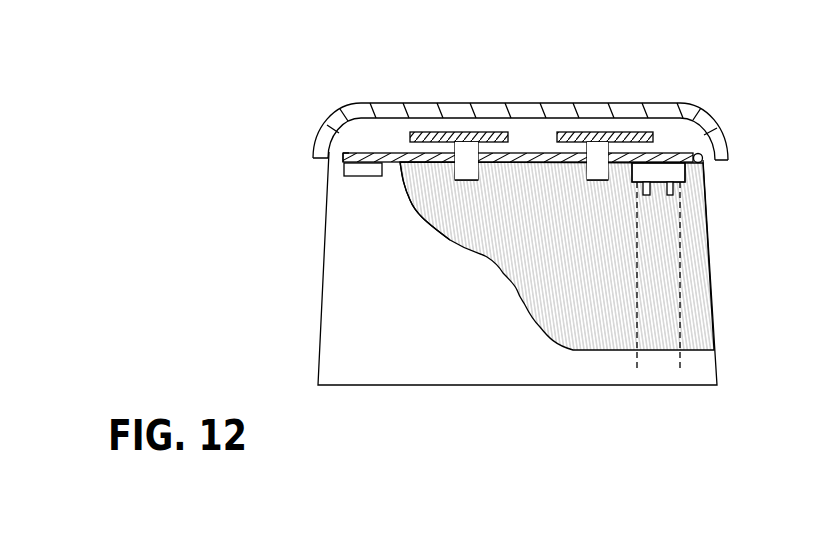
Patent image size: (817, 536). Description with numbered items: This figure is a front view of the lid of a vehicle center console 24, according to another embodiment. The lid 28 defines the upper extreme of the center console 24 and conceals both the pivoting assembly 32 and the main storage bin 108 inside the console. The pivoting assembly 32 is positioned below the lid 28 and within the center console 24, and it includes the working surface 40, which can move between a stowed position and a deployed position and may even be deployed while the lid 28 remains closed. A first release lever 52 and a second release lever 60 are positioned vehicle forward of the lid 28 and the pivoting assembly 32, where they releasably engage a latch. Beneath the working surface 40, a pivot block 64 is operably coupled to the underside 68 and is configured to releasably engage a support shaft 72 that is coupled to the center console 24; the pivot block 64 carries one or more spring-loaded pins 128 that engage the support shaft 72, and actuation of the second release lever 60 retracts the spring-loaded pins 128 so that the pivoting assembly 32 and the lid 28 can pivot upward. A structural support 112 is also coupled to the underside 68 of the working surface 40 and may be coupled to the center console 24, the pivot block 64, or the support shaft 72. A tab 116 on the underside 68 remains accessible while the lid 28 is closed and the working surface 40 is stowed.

The center console 24 is at (208, 129).
The lid 28 is at (656, 107).
The pivoting assembly 32 is at (372, 168).
The working surface 40 is at (343, 158).
The first release lever 52 is at (437, 135).
The second release lever 60 is at (612, 137).
The pivot block 64 is at (683, 173).
The underside 68 is at (394, 170).
The support shaft 72 is at (658, 295).
The main storage bin 108 is at (390, 320).
The structural support 112 is at (562, 305).
The tab 116 is at (360, 174).
The spring-loaded pins 128 is at (647, 197).